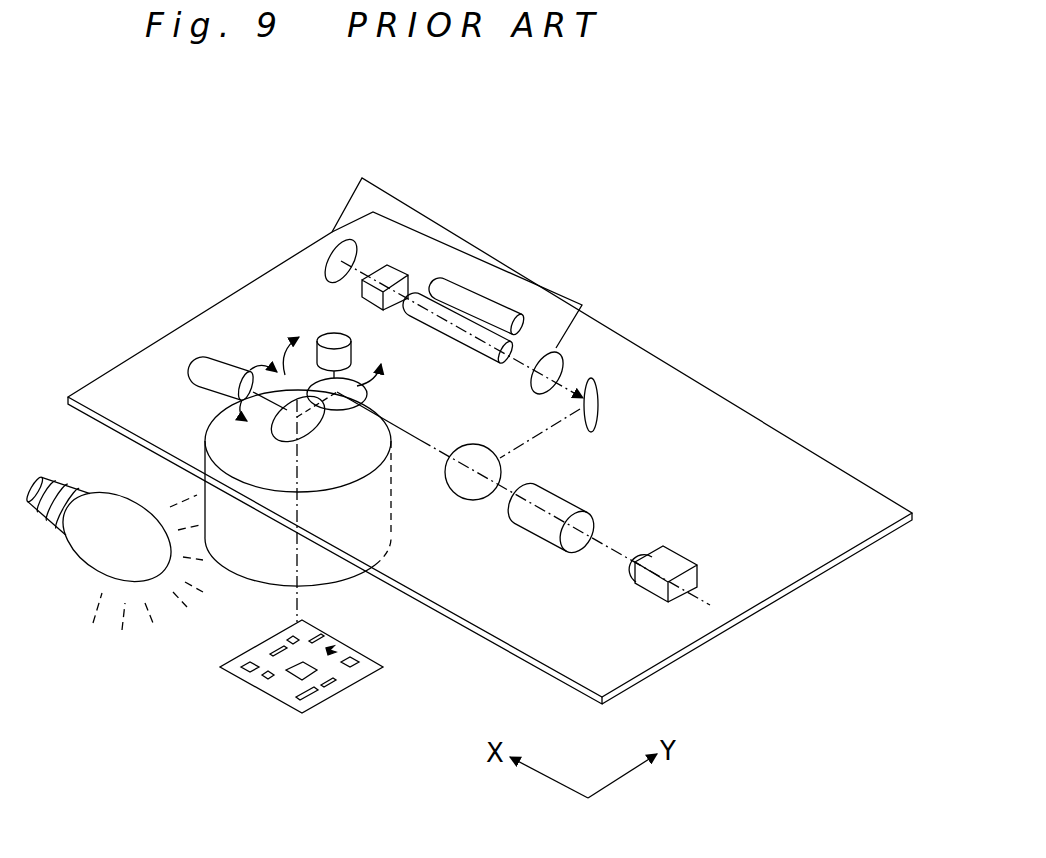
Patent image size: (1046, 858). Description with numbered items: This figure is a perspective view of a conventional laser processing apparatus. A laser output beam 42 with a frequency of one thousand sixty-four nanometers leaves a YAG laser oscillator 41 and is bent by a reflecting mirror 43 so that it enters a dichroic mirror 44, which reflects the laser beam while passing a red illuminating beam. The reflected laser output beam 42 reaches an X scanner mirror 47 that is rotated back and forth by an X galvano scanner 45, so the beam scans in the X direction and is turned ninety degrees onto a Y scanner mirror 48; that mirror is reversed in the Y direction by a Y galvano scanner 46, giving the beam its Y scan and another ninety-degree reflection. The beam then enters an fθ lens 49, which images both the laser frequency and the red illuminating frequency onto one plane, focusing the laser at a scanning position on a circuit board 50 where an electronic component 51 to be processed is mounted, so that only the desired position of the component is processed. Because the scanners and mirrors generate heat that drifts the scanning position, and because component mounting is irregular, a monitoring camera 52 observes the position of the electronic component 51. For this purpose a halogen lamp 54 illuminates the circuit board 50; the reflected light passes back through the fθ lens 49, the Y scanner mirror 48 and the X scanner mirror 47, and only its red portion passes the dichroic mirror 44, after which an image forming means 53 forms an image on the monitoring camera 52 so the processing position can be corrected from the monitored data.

The YAG laser oscillator 41 is at (438, 221).
The laser output beam 42 is at (556, 352).
The reflecting mirror 43 is at (598, 398).
The dichroic mirror 44 is at (477, 498).
The X galvano scanner 45 is at (328, 333).
The Y galvano scanner 46 is at (197, 367).
The X scanner mirror 47 is at (317, 380).
The Y scanner mirror 48 is at (293, 388).
The fθ lens 49 is at (203, 437).
The circuit board 50 is at (352, 690).
The electronic component 51 is at (291, 675).
The monitoring camera 52 is at (683, 553).
The image forming means 53 is at (583, 503).
The halogen lamp 54 is at (82, 563).